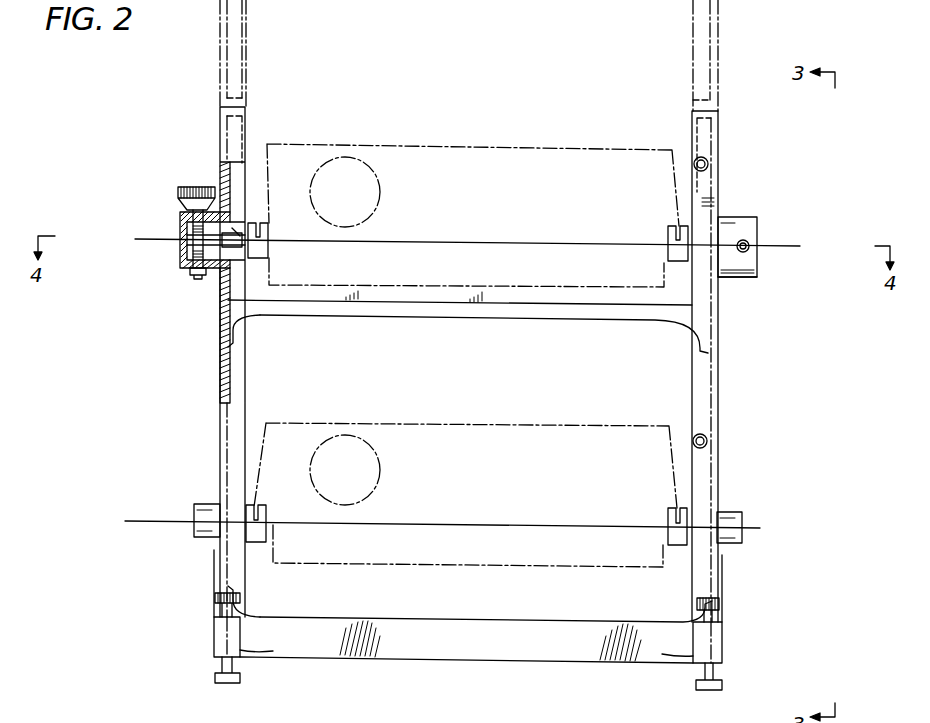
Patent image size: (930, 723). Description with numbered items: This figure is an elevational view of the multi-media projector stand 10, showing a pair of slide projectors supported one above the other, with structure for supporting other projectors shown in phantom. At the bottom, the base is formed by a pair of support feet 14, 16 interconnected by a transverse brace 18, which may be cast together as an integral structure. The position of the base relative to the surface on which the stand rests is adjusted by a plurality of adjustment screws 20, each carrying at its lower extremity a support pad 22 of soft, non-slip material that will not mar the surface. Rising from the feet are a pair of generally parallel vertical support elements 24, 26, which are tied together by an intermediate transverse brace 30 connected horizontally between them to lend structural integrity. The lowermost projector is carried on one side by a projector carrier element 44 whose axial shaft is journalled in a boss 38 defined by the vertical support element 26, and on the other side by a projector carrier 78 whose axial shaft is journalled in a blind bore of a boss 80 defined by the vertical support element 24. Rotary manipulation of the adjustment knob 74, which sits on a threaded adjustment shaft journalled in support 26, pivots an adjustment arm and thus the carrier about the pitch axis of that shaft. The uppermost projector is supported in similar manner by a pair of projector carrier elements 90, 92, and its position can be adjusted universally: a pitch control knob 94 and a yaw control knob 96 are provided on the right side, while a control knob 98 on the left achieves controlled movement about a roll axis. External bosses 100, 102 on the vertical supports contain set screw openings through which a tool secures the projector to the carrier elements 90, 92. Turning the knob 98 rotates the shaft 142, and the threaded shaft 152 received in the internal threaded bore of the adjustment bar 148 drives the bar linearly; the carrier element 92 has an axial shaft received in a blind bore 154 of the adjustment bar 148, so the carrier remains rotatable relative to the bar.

The multi-media projector stand 10 is at (108, 144).
The support foot 14 is at (214, 637).
The support foot 16 is at (724, 640).
The transverse brace 18 is at (466, 659).
The adjustment screw 20 is at (720, 605).
The support pad 22 is at (725, 683).
The vertical support element 24 is at (221, 386).
The vertical support element 26 is at (719, 378).
The intermediate transverse brace 30 is at (447, 316).
The boss 38 is at (745, 519).
The projector carrier element 44 is at (670, 538).
The adjustment knob 74 is at (708, 441).
The projector carrier 78 is at (267, 537).
The boss 80 is at (195, 511).
The projector carrier element 90 is at (673, 251).
The projector carrier element 92 is at (262, 253).
The pitch control knob 94 is at (710, 164).
The yaw control knob 96 is at (750, 243).
The control knob 98 is at (197, 186).
The external boss 100 is at (752, 270).
The external boss 102 is at (190, 275).
The shaft 142 is at (180, 257).
The adjustment bar 148 is at (183, 236).
The threaded shaft 152 is at (222, 292).
The blind bore 154 is at (232, 232).